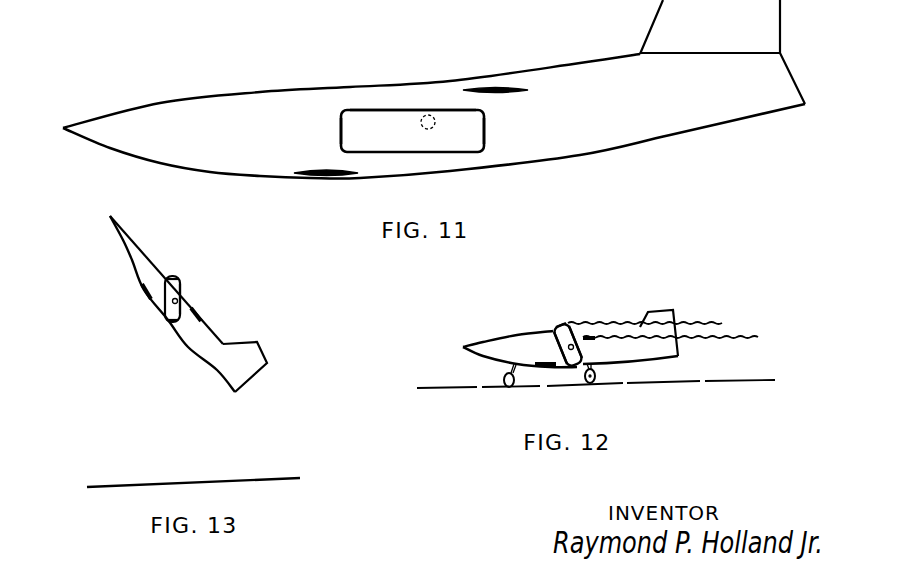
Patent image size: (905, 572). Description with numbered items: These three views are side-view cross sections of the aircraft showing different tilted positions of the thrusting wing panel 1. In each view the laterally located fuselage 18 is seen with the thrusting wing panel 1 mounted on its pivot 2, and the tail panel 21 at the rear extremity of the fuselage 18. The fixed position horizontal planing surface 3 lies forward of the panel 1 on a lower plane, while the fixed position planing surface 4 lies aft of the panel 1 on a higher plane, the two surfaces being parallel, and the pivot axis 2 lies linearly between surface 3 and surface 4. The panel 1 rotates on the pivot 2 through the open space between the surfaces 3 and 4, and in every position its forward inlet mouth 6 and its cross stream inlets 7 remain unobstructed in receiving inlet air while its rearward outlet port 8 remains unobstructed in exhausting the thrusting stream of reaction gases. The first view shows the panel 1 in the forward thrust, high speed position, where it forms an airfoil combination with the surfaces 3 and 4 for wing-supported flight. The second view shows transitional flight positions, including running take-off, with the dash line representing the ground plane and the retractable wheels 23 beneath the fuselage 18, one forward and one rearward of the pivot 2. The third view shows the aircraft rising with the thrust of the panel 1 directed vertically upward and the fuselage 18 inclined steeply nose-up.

In FIG. 11, the thrusting wing panel 1 is at (458, 137).
In FIG. 13, the thrusting wing panel 1 is at (170, 308).
In FIG. 12, the thrusting wing panel 1 is at (563, 332).
In FIG. 11, the pivots 2 is at (427, 128).
In FIG. 13, the pivots 2 is at (178, 300).
In FIG. 12, the pivots 2 is at (568, 348).
In FIG. 11, the fixed position horizontal aerodynamic planing surface 3 is at (317, 168).
In FIG. 13, the fixed position horizontal aerodynamic planing surface 3 is at (147, 290).
In FIG. 12, the fixed position horizontal aerodynamic planing surface 3 is at (542, 366).
In FIG. 11, the fixed position horizontal planing surface 4 is at (508, 92).
In FIG. 13, the fixed position horizontal planing surface 4 is at (200, 317).
In FIG. 12, the fixed position horizontal planing surface 4 is at (590, 340).
In FIG. 11, the thrusting wing panel forward inlet mouth 6 is at (341, 130).
In FIG. 13, the thrusting wing panel forward inlet mouth 6 is at (175, 277).
In FIG. 12, the thrusting wing panel forward inlet mouth 6 is at (557, 328).
In FIG. 11, the power panel cross stream inlets 7 is at (368, 110).
In FIG. 13, the power panel cross stream inlets 7 is at (181, 290).
In FIG. 12, the power panel cross stream inlets 7 is at (573, 330).
In FIG. 11, the thrusting wing panel rearward outlet port 8 is at (485, 127).
In FIG. 13, the thrusting wing panel rearward outlet port 8 is at (172, 331).
In FIG. 12, the thrusting wing panel rearward outlet port 8 is at (580, 366).
In FIG. 11, the fuselage 18 is at (181, 143).
In FIG. 13, the fuselage 18 is at (128, 247).
In FIG. 12, the fuselage 18 is at (487, 345).
In FIG. 11, the tail panels 21 is at (730, 27).
In FIG. 13, the tail panels 21 is at (247, 347).
In FIG. 12, the tail panels 21 is at (663, 318).
In FIG. 12, the retractable wheels 23 is at (503, 378).